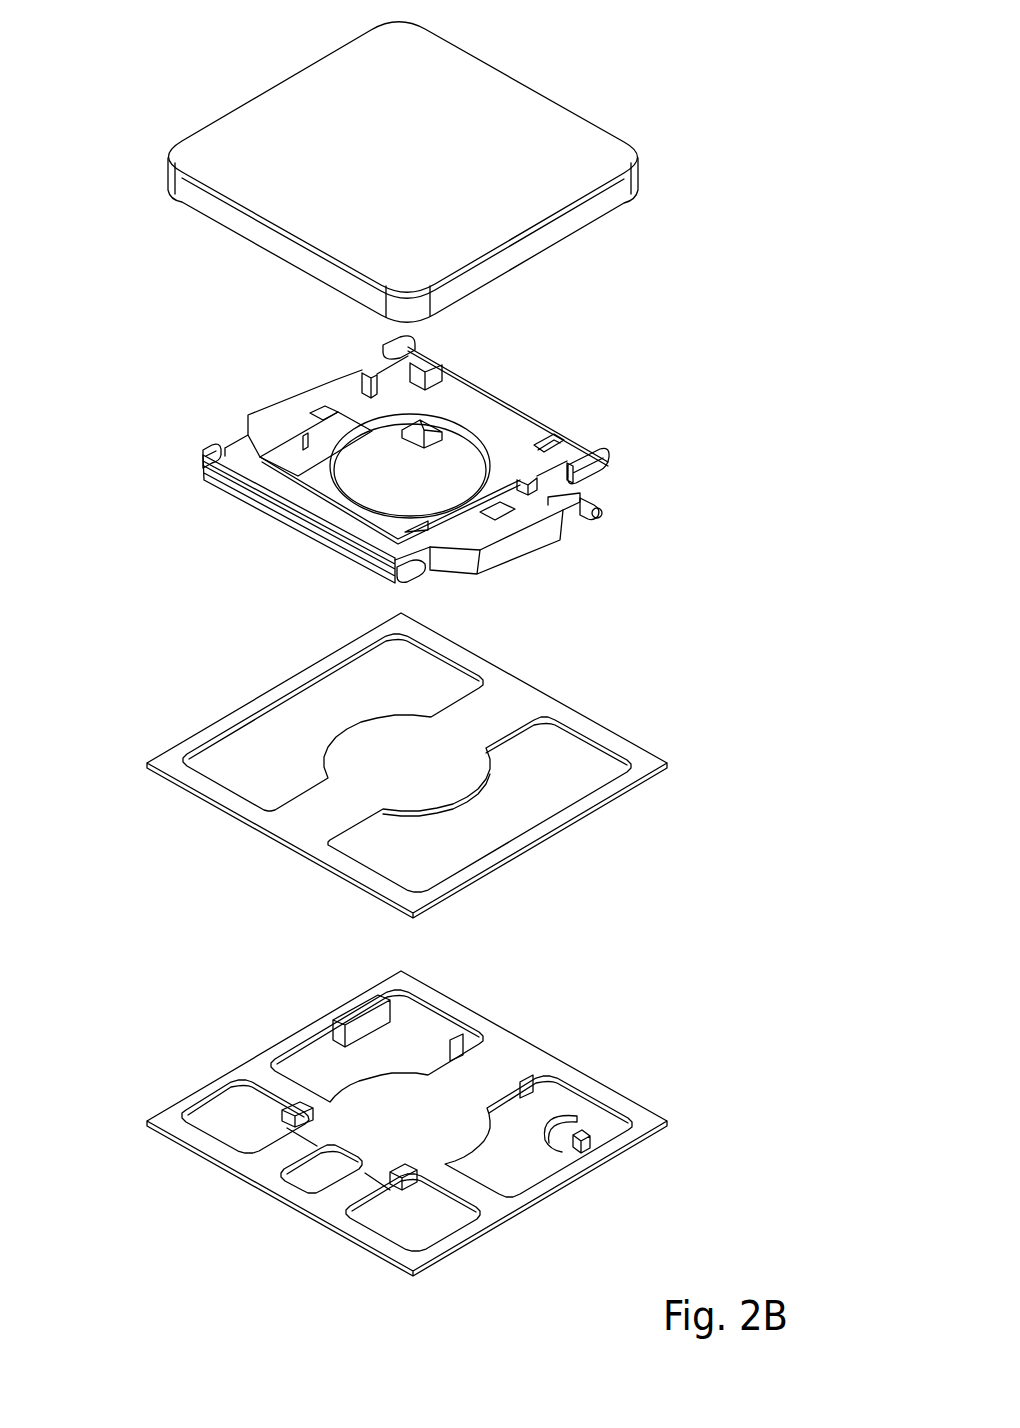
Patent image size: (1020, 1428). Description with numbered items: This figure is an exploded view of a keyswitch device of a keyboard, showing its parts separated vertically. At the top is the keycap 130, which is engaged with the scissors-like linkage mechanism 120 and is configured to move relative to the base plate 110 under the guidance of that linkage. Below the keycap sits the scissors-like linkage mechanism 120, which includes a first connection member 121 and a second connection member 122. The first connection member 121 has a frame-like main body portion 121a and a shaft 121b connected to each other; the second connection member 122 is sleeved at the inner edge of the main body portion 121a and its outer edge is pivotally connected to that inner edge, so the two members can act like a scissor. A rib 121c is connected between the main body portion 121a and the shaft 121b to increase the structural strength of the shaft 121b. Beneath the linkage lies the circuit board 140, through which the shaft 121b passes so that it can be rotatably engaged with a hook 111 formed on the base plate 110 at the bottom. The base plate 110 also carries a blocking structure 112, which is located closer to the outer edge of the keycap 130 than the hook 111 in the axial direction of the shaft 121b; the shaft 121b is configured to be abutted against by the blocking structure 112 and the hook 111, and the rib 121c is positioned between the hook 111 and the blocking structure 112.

The base plate 110 is at (376, 1123).
The hook 111 is at (570, 1152).
The blocking structure 112 is at (590, 1143).
The scissors-like linkage mechanism 120 is at (448, 442).
The first connection member 121 is at (448, 465).
The main body portion 121a is at (525, 506).
The shaft 121b is at (597, 513).
The rib 121c is at (575, 522).
The second connection member 122 is at (358, 415).
The keycap 130 is at (500, 100).
The circuit board 140 is at (173, 765).